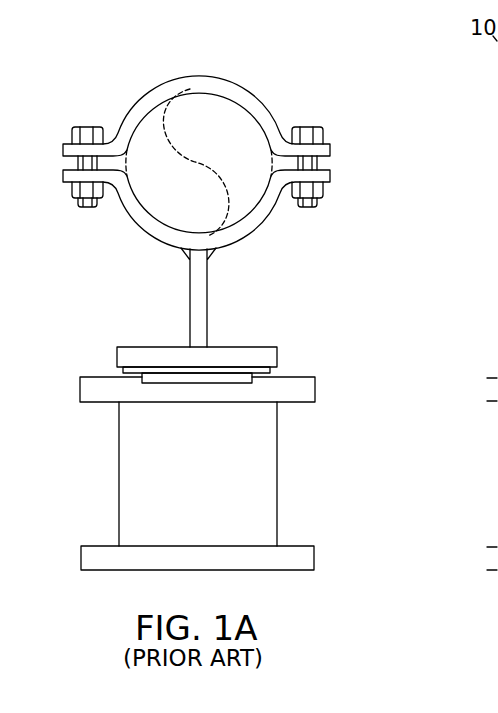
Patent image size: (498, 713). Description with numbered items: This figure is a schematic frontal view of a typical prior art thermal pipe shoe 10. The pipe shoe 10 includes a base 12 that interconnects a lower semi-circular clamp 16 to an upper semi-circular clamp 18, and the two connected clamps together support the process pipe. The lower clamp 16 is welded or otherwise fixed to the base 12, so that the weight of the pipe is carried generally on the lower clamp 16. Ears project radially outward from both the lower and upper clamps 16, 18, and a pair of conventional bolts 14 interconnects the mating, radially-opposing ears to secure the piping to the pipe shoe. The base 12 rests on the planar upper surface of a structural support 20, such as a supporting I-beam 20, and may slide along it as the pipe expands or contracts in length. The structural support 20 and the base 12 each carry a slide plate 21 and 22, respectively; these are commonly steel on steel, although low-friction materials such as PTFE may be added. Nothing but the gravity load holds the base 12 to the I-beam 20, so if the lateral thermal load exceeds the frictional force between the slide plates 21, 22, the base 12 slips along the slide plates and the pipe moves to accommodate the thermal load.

The thermal pipe shoe 10 is at (99, 79).
The base 12 is at (128, 347).
The bolts 14 is at (72, 133).
The lower semi-circular clamp 16 is at (132, 222).
The upper semi-circular clamp 18 is at (236, 83).
The structural support 20 is at (119, 473).
The slide plate 21 is at (223, 383).
The slide plate 22 is at (258, 367).